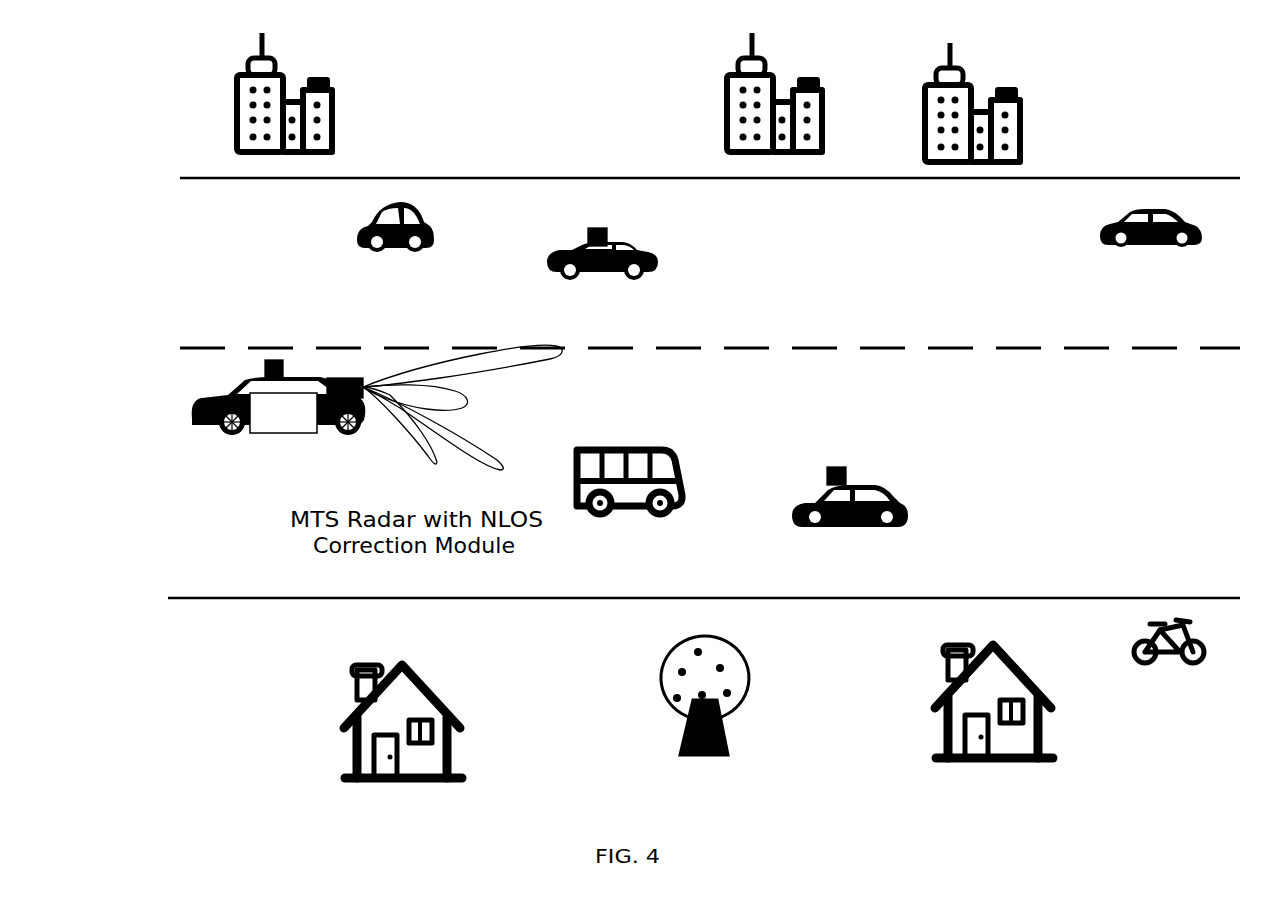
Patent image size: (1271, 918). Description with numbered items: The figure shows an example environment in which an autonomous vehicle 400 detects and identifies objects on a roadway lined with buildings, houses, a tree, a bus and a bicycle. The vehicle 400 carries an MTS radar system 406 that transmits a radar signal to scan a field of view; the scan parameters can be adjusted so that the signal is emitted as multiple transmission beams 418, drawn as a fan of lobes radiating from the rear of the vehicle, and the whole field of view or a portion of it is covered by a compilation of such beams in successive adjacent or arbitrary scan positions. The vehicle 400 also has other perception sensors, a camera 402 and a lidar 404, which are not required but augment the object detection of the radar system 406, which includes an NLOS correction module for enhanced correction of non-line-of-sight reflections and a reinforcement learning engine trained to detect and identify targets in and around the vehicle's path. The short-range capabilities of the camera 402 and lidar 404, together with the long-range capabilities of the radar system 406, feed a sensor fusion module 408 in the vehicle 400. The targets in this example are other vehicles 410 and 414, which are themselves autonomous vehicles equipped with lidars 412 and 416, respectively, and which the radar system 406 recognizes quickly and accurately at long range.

The vehicle 400 is at (268, 408).
The camera 402 is at (370, 428).
The lidar 404 is at (268, 360).
The MTS radar system 406 is at (348, 434).
The sensor fusion module 408 is at (195, 424).
The vehicle 410 is at (556, 251).
The lidar 412 is at (607, 228).
The vehicle 414 is at (794, 503).
The lidar 416 is at (824, 468).
The transmission beams 418 is at (468, 407).